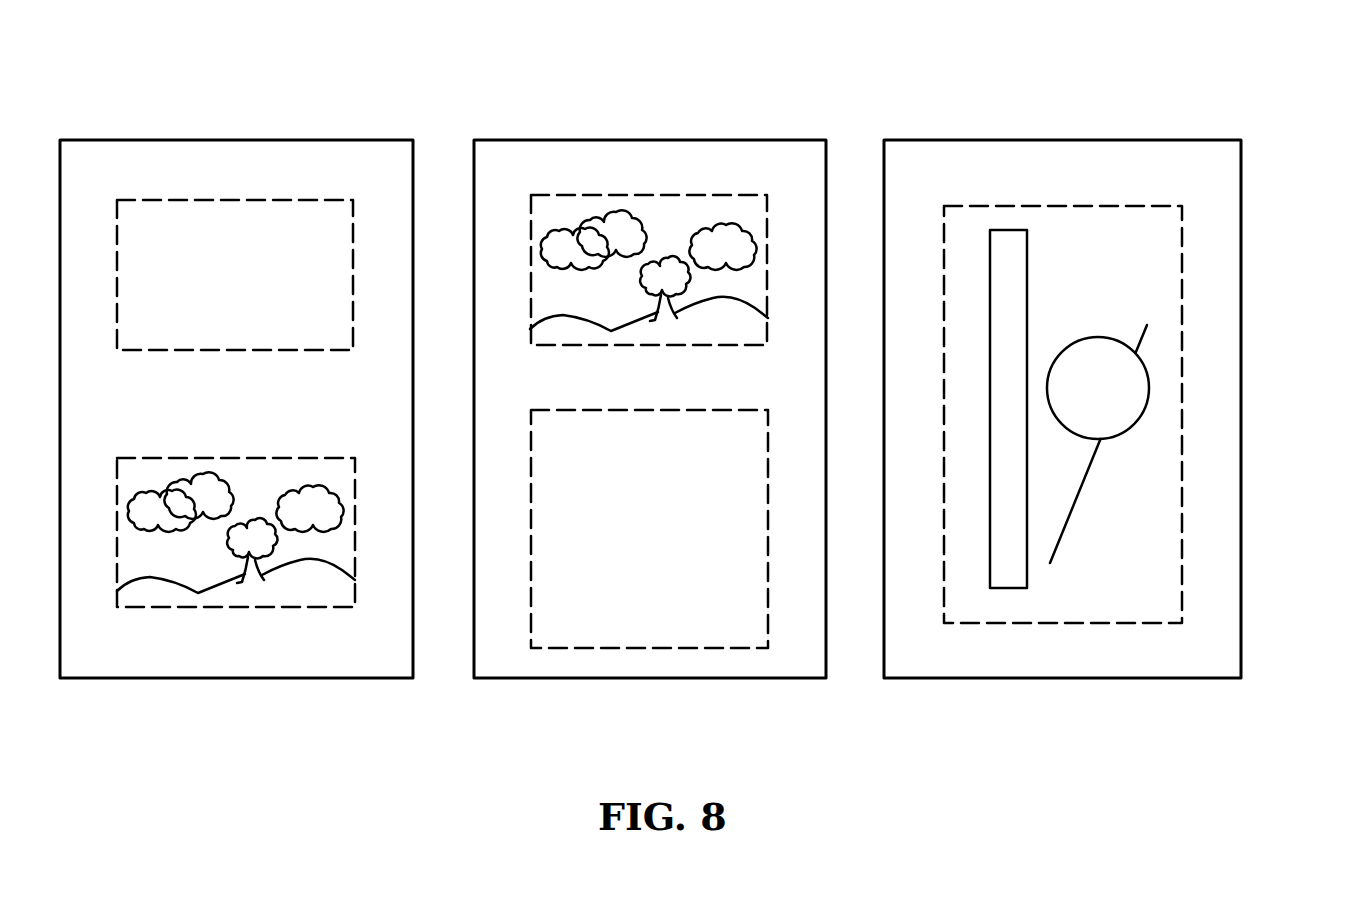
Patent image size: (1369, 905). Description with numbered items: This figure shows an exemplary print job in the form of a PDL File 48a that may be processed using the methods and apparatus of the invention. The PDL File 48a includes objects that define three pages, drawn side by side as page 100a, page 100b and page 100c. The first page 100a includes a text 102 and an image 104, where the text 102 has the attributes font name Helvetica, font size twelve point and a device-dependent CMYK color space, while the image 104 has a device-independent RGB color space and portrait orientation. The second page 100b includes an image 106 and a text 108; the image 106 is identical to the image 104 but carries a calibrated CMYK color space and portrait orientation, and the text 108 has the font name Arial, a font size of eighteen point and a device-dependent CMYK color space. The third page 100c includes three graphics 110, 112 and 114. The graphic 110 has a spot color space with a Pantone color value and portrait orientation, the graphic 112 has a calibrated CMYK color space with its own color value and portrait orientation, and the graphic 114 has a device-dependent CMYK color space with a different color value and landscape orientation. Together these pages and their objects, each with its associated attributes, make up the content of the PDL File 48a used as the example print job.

The PDL File 48a is at (1296, 72).
The page 100a is at (322, 140).
The page 100b is at (730, 140).
The page 100c is at (1150, 140).
The text 102 is at (297, 200).
The image 104 is at (298, 458).
The image 106 is at (718, 195).
The text 108 is at (717, 410).
The graphic 110 is at (1027, 273).
The graphic 112 is at (1072, 338).
The graphic 114 is at (1070, 520).